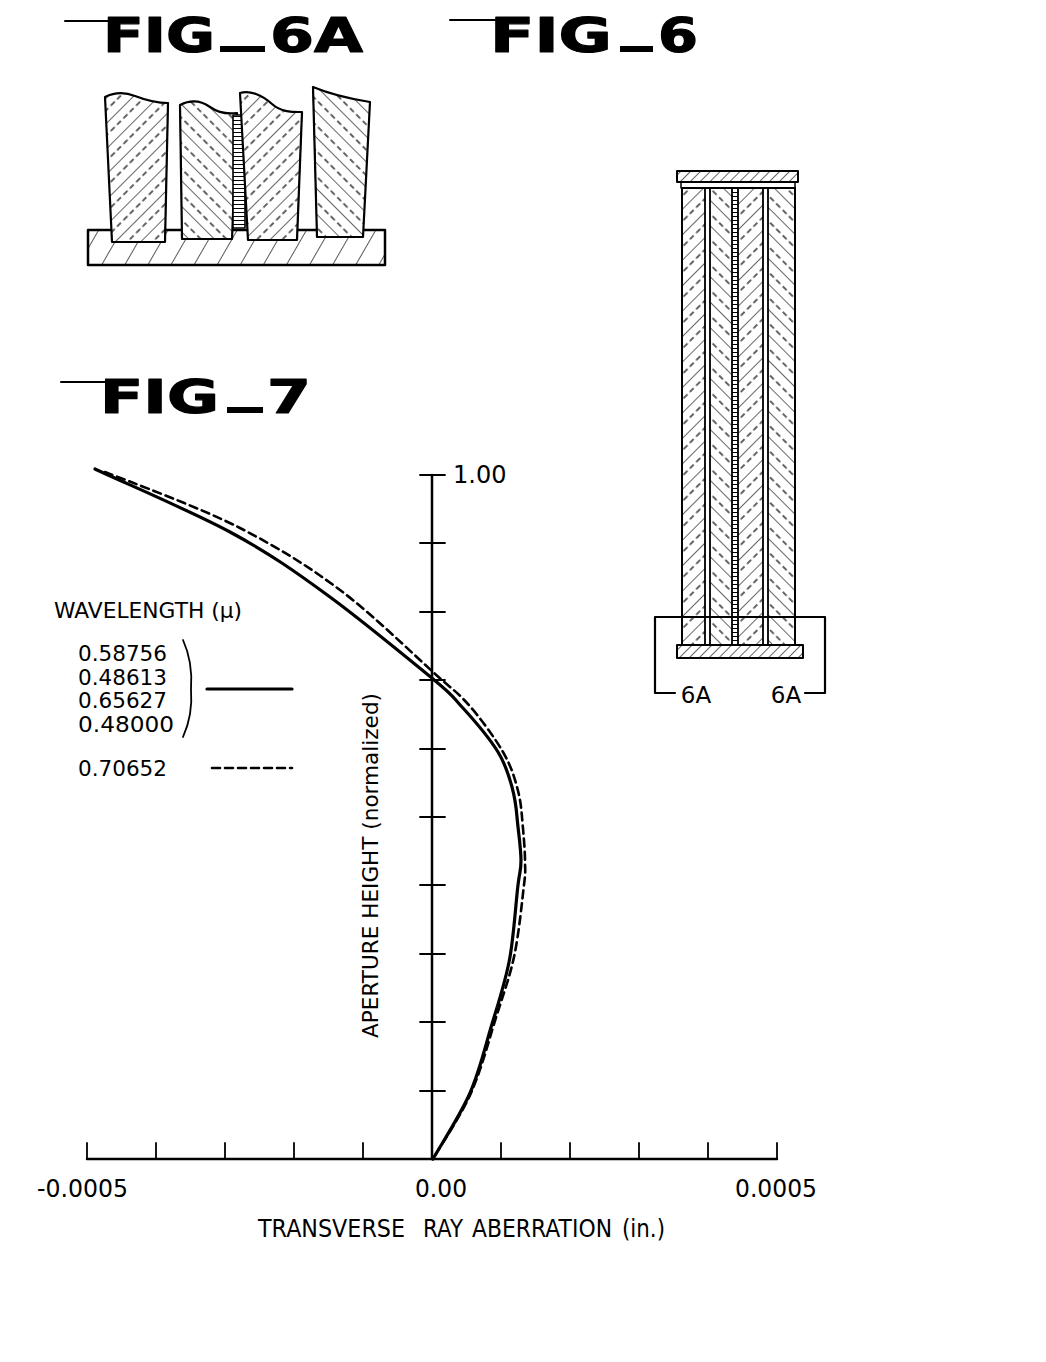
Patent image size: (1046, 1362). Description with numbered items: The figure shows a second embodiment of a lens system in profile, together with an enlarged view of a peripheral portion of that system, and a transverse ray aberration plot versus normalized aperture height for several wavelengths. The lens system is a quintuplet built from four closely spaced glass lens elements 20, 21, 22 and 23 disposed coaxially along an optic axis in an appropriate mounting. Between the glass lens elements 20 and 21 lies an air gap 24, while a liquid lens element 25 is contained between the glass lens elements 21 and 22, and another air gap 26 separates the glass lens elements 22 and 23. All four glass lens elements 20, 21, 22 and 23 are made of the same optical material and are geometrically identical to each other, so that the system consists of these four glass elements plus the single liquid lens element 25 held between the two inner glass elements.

In FIG. 6A, the glass lens element 20 is at (131, 123).
In FIG. 6, the glass lens element 20 is at (697, 225).
In FIG. 6A, the glass lens element 21 is at (200, 162).
In FIG. 6, the glass lens element 21 is at (722, 283).
In FIG. 6A, the glass lens element 22 is at (282, 147).
In FIG. 6, the glass lens element 22 is at (748, 263).
In FIG. 6A, the glass lens element 23 is at (348, 195).
In FIG. 6, the glass lens element 23 is at (782, 313).
In FIG. 6A, the air gap 24 is at (176, 222).
In FIG. 6, the air gap 24 is at (707, 186).
In FIG. 6A, the liquid lens element 25 is at (242, 222).
In FIG. 6, the liquid lens element 25 is at (735, 186).
In FIG. 6A, the air gap 26 is at (308, 220).
In FIG. 6, the air gap 26 is at (766, 186).